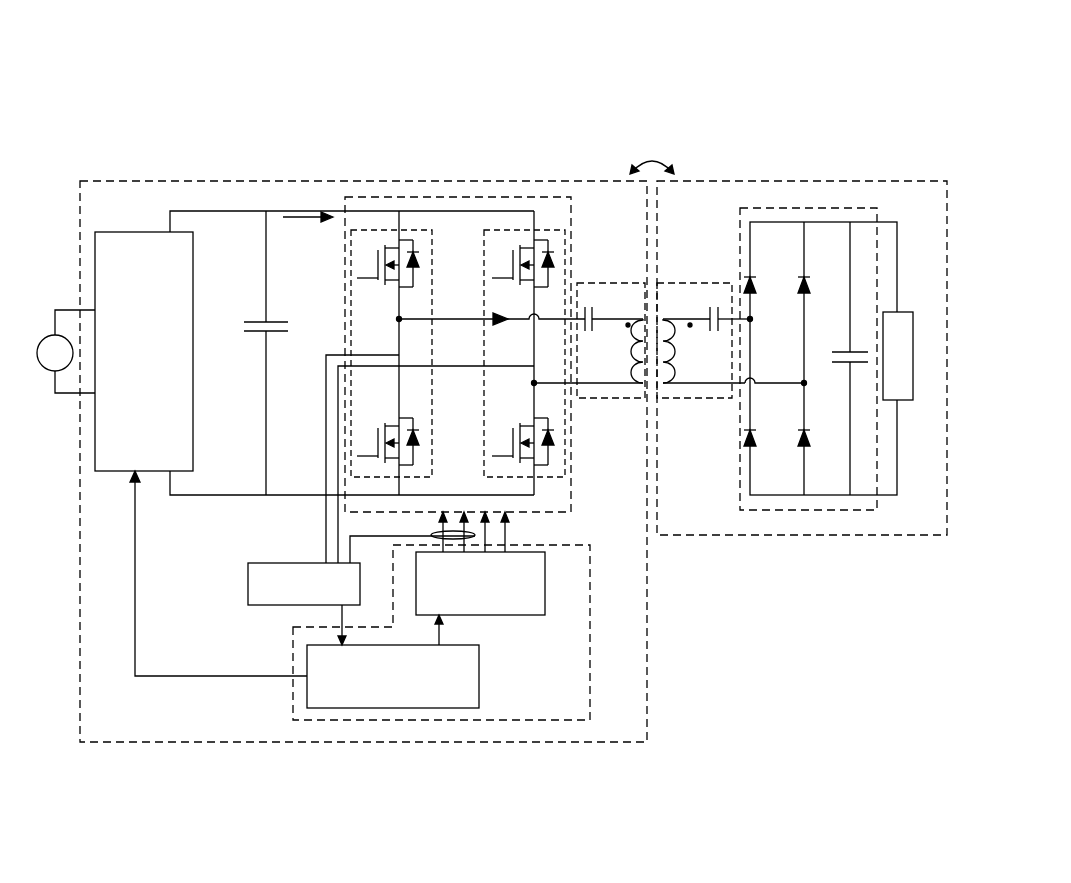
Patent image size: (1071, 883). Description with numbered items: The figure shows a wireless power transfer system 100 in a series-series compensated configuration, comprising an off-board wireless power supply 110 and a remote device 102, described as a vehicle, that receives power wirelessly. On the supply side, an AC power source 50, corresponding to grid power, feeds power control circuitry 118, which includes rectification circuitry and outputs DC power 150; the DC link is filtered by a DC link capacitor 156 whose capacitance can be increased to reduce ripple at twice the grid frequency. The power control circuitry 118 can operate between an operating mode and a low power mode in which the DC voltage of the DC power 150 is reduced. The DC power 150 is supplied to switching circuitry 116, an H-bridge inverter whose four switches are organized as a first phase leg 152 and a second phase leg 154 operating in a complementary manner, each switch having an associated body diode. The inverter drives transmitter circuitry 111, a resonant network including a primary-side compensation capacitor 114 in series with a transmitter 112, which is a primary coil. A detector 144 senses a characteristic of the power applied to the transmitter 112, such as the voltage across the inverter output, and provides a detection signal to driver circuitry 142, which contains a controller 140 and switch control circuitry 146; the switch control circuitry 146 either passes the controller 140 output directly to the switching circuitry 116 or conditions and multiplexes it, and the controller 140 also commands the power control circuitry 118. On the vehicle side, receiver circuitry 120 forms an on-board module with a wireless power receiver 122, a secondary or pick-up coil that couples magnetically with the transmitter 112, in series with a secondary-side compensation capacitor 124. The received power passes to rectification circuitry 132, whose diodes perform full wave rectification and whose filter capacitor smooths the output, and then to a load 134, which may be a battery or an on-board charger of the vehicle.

The wireless power transfer system 100 is at (703, 92).
The remote device 102 is at (827, 535).
The wireless power supply 110 is at (228, 181).
The transmitter circuitry 111 is at (618, 398).
The transmitter 112 is at (633, 312).
The primary-side compensation capacitor 114 is at (583, 322).
The switching circuitry 116 is at (395, 197).
The power control circuitry 118 is at (131, 232).
The receiver circuitry 120 is at (690, 398).
The wireless power receiver 122 is at (683, 350).
The capacitor 124 is at (705, 303).
The rectification circuitry 132 is at (845, 208).
The load 134 is at (903, 312).
The controller 140 is at (479, 680).
The driver circuitry 142 is at (293, 700).
The detector 144 is at (248, 592).
The switch control circuitry 146 is at (522, 615).
The DC power 150 is at (292, 211).
The first phase leg 152 is at (425, 298).
The second phase leg 154 is at (485, 372).
The DC link capacitor 156 is at (250, 331).
The AC power source 50 is at (53, 372).